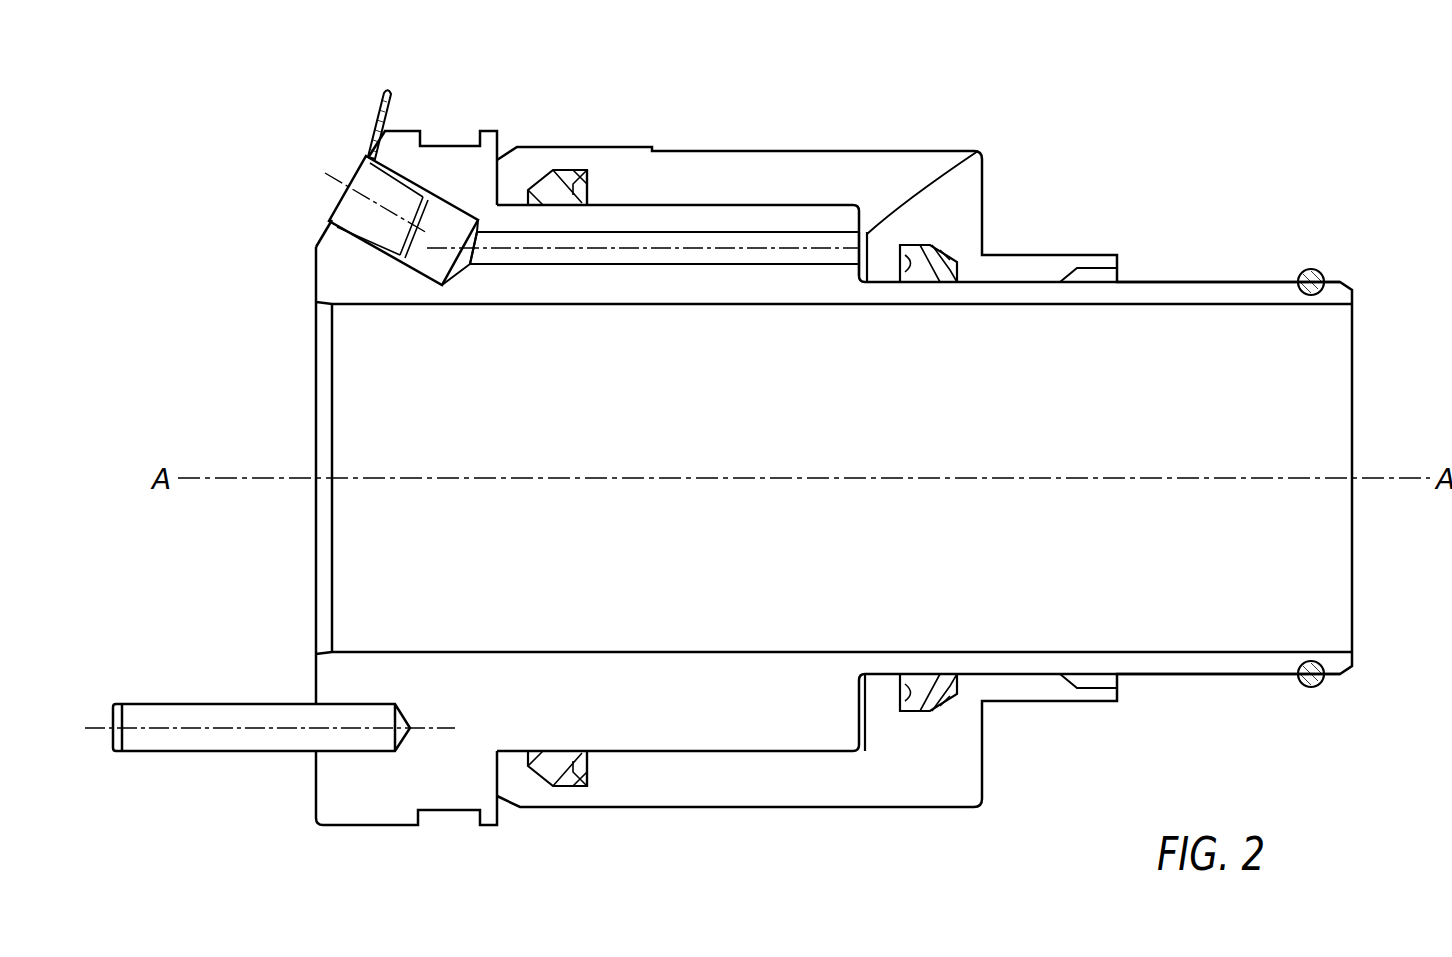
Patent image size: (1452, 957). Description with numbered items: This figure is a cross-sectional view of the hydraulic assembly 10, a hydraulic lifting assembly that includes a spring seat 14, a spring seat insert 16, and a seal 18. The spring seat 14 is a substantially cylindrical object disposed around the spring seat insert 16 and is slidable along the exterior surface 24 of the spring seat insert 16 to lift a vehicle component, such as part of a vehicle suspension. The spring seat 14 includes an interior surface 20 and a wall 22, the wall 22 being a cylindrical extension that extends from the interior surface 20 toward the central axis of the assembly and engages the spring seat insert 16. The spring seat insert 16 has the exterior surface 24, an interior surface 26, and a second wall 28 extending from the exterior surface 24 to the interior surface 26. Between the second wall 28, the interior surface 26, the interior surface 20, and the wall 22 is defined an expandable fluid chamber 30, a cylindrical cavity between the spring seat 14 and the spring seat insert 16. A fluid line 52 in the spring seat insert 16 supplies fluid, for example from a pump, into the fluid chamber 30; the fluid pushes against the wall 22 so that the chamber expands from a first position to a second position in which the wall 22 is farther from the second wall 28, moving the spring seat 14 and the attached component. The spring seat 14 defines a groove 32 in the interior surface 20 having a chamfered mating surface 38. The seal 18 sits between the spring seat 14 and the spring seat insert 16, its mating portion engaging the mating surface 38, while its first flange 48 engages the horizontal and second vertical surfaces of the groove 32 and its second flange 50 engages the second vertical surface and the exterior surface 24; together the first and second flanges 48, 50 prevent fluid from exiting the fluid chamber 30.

The hydraulic assembly 10 is at (208, 111).
The spring seat 14 is at (930, 148).
The spring seat insert 16 is at (643, 282).
The seal 18 is at (553, 180).
The interior surface 20 is at (710, 203).
The wall 22 is at (863, 237).
The exterior surface 24 is at (730, 207).
The interior surface 26 is at (877, 283).
The second wall 28 is at (855, 253).
The expandable fluid chamber 30 is at (978, 151).
The groove 32 is at (590, 188).
The mating surface 38 is at (538, 175).
The first flange 48 is at (580, 168).
The second flange 50 is at (577, 207).
The fluid line 52 is at (490, 237).